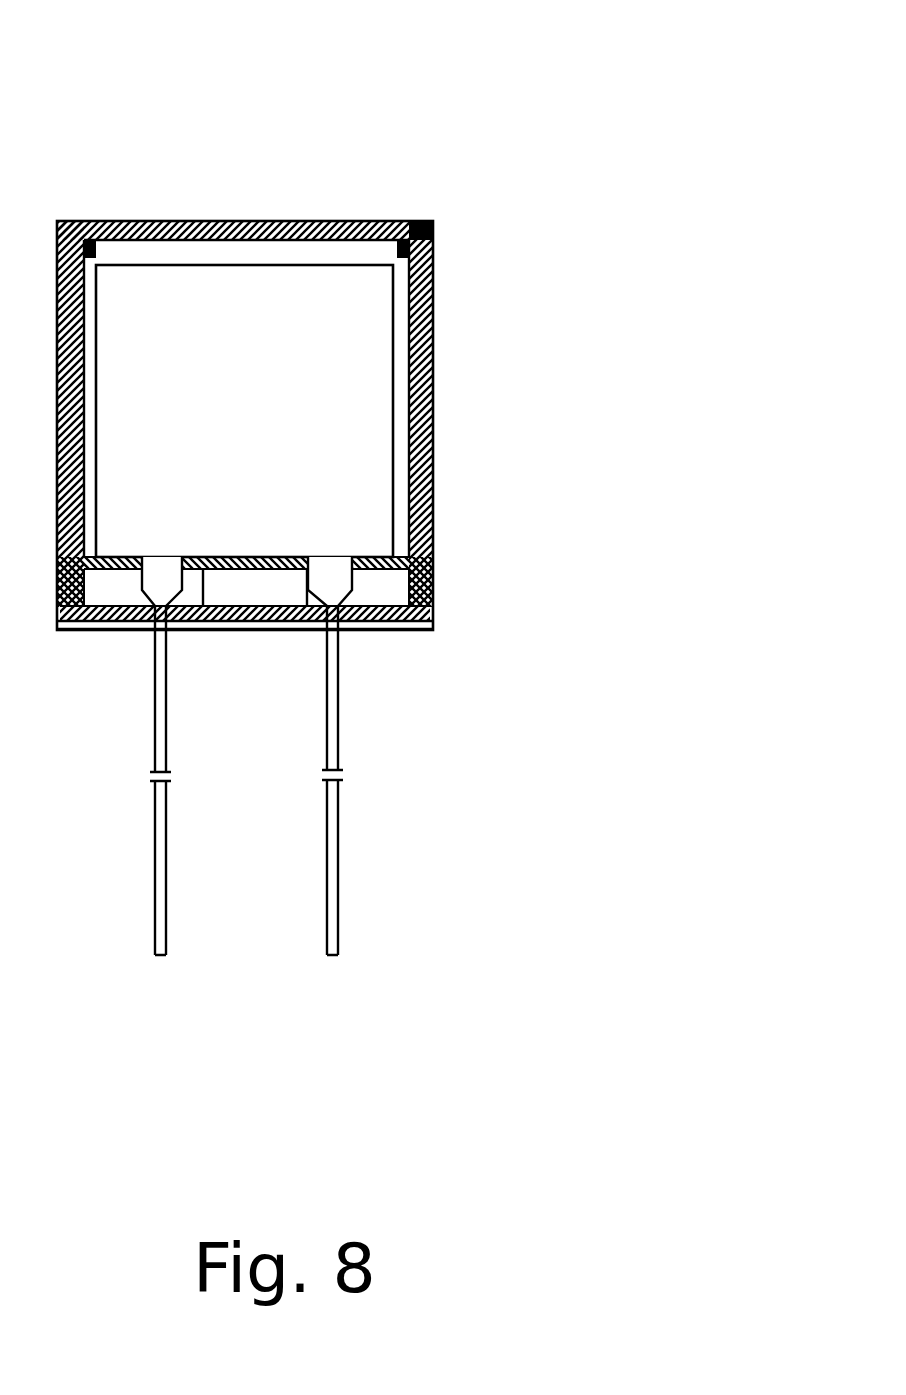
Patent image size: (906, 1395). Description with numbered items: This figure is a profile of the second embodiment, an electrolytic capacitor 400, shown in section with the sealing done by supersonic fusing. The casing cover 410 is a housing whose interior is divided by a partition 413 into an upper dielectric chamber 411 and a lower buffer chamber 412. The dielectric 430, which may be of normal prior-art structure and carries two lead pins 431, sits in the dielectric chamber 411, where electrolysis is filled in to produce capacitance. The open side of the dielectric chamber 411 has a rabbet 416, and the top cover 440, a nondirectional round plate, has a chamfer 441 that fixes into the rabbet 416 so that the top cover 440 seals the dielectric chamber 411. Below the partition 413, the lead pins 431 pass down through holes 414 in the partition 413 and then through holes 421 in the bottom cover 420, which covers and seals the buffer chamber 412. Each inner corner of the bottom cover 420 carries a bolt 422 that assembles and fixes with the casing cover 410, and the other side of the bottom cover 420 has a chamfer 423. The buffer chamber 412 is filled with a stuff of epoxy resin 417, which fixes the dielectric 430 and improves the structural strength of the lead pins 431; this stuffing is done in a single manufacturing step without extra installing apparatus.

The electrolytic capacitor 400 is at (437, 212).
The casing cover 410 is at (433, 389).
The dielectric chamber 411 is at (433, 297).
The buffer chamber 412 is at (425, 580).
The partition 413 is at (210, 628).
The holes 414 is at (128, 571).
The rabbet 416 is at (433, 237).
The epoxy resin 417 is at (250, 628).
The bottom cover 420 is at (275, 628).
The holes 421 is at (137, 626).
The bolt 422 is at (435, 560).
The chamfer 423 is at (395, 630).
The dielectric 430 is at (158, 283).
The lead pins 431 is at (338, 813).
The top cover 440 is at (240, 221).
The chamfer 441 is at (403, 256).